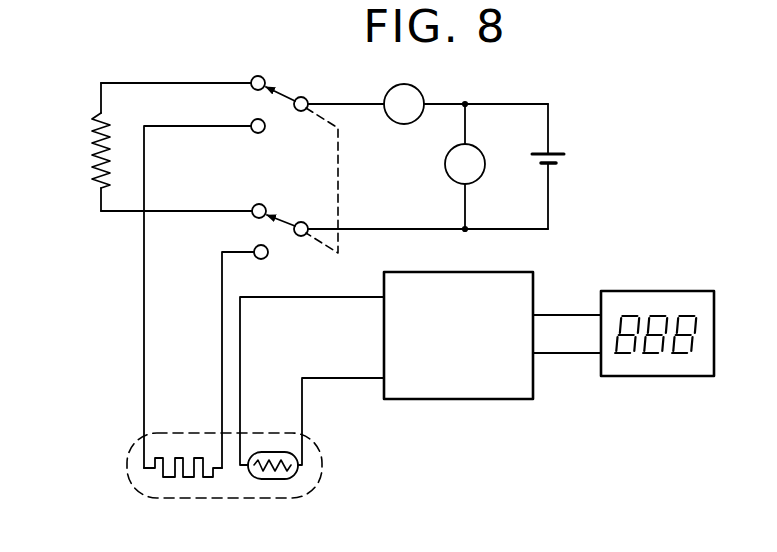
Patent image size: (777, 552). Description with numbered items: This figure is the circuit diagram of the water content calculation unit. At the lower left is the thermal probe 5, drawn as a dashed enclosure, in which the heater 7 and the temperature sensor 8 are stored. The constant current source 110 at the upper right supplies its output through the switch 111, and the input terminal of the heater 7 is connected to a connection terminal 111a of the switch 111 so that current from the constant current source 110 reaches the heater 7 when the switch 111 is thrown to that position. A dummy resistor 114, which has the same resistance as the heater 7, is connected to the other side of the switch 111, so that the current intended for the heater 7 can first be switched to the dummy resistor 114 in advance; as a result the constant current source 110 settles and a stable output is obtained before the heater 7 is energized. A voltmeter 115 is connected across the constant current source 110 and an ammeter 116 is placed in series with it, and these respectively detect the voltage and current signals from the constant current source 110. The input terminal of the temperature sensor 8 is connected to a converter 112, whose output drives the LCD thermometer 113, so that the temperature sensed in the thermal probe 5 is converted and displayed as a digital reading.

The thermal probe 5 is at (322, 452).
The heater 7 is at (183, 452).
The temperature sensor 8 is at (271, 450).
The constant current source 110 is at (554, 149).
The switch 111 is at (290, 83).
The connection terminal 111a is at (259, 133).
The converter 112 is at (483, 400).
The LCD thermometer 113 is at (645, 290).
The dummy resistor 114 is at (99, 126).
The voltmeter 115 is at (482, 153).
The ammeter 116 is at (419, 90).